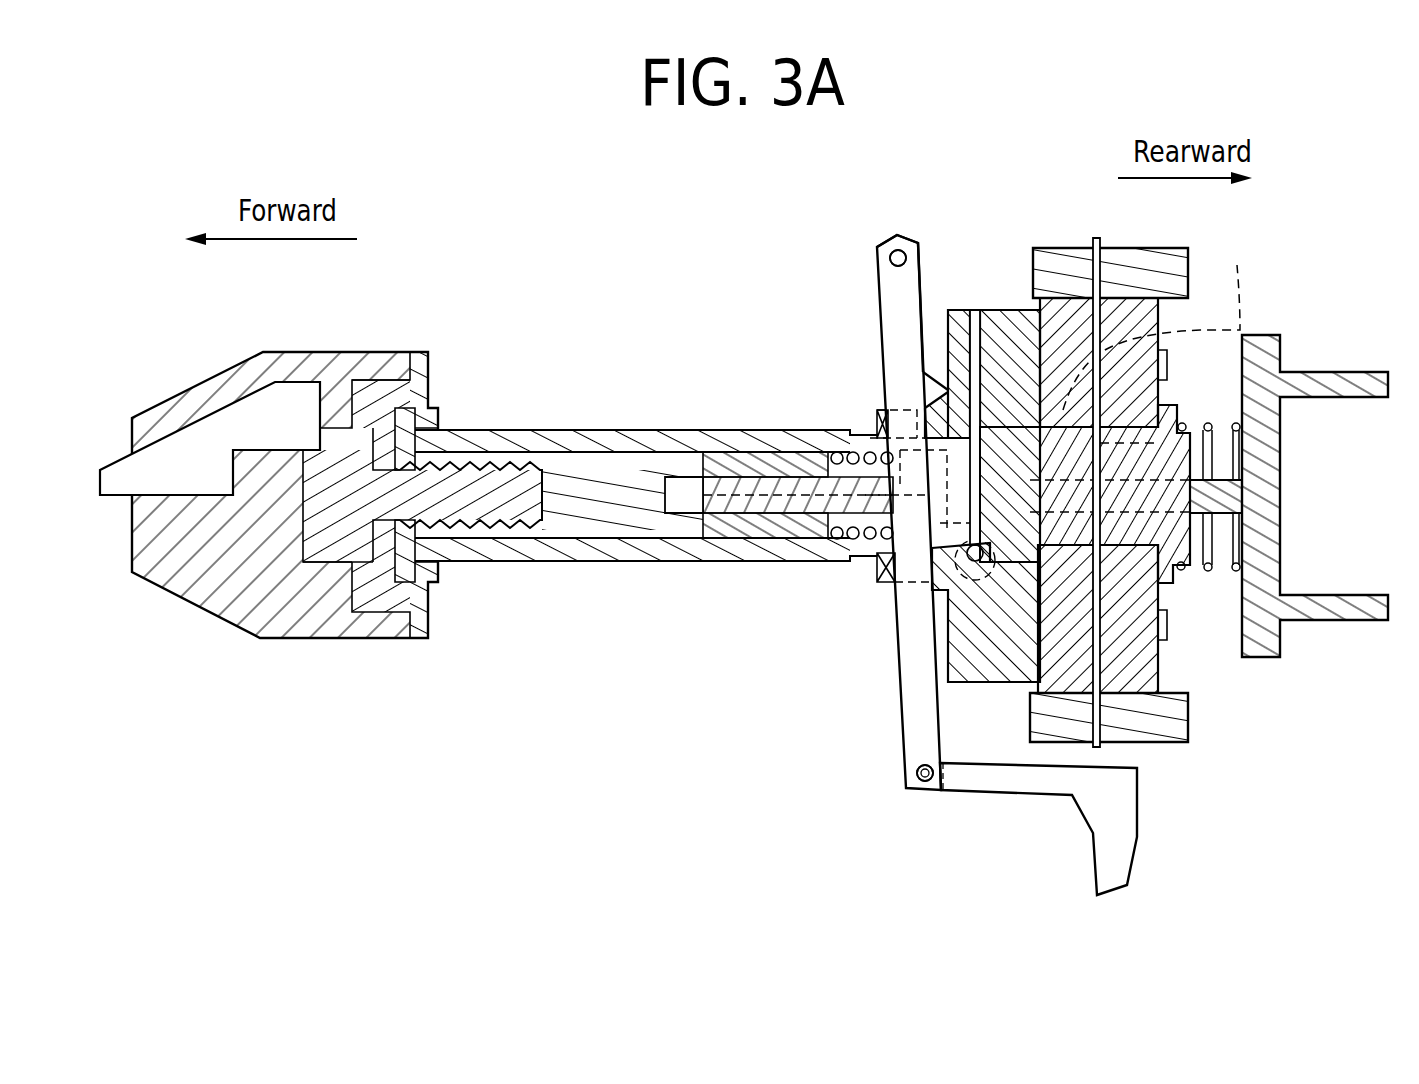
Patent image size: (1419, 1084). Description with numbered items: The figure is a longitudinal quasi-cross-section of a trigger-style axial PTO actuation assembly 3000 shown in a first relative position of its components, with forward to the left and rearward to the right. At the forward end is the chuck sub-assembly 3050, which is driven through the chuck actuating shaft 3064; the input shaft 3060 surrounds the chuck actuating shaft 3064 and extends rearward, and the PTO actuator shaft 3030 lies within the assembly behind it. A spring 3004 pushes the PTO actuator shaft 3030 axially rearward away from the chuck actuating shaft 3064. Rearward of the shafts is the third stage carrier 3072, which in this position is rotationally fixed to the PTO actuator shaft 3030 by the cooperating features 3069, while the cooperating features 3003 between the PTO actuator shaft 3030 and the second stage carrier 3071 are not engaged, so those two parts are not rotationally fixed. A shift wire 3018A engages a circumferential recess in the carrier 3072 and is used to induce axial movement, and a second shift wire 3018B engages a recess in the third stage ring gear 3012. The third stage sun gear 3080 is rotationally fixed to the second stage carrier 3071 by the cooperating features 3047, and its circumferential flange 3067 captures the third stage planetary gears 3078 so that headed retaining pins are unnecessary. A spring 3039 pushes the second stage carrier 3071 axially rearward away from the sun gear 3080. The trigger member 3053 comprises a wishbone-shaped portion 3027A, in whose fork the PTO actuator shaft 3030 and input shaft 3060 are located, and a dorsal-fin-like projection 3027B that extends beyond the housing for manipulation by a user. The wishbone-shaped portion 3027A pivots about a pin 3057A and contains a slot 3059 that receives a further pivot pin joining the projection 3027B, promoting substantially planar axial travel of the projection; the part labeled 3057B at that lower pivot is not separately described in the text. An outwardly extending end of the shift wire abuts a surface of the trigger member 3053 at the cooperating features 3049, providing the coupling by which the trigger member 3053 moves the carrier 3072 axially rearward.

The trigger-style PTO actuation assembly 3000 is at (631, 257).
The chuck sub-assembly 3050 is at (289, 649).
The input shaft 3060 is at (520, 430).
The chuck actuating shaft 3064 is at (590, 527).
The PTO actuator shaft 3030 is at (735, 470).
The cooperating features 3049 is at (760, 505).
The spring 3004 is at (870, 450).
The cooperating features 3003 is at (880, 583).
The cooperating features 3069 is at (947, 622).
The third stage carrier 3072 is at (948, 385).
The trigger member 3053 is at (850, 295).
The pin 3057A is at (890, 258).
The lower pivot 3057B is at (930, 762).
The wishbone-shaped portion 3027A is at (920, 712).
The dorsal-fin-like projection 3027B is at (1082, 823).
The slot 3059 is at (960, 790).
The shift wire 3018A is at (977, 307).
The shift wire 3018B is at (1097, 238).
The third stage ring gear 3012 is at (1062, 248).
The cooperating features 3047 is at (1127, 397).
The circumferential flange 3067 is at (1145, 415).
The second stage carrier 3071 is at (1286, 309).
The spring 3039 is at (1210, 430).
The third stage sun gear 3080 is at (1170, 527).
The third stage planetary gears 3078 is at (1158, 665).